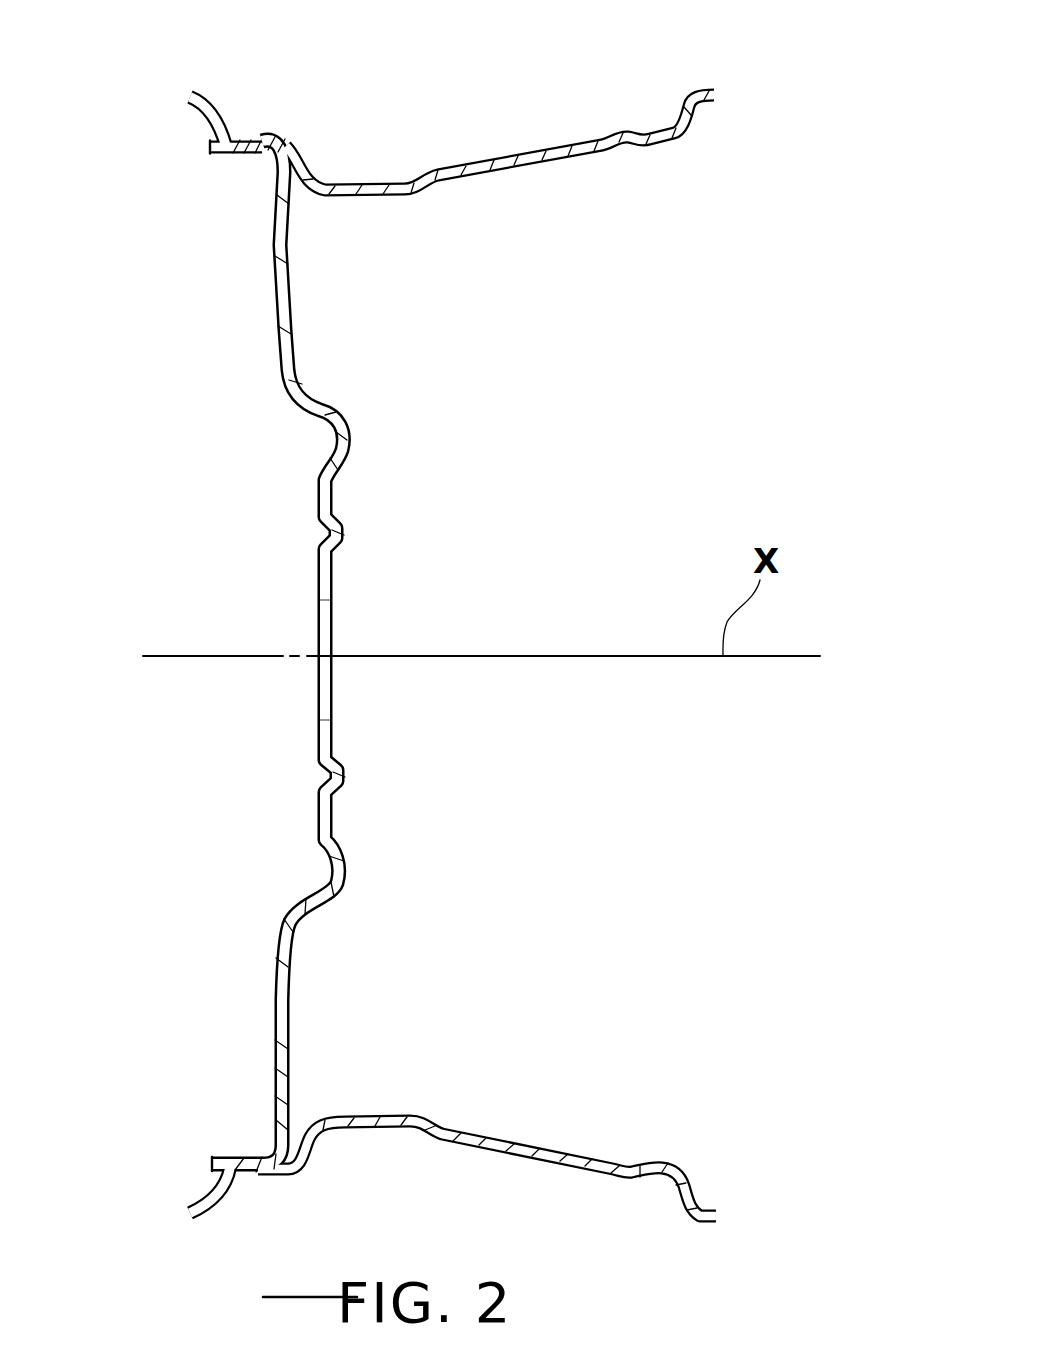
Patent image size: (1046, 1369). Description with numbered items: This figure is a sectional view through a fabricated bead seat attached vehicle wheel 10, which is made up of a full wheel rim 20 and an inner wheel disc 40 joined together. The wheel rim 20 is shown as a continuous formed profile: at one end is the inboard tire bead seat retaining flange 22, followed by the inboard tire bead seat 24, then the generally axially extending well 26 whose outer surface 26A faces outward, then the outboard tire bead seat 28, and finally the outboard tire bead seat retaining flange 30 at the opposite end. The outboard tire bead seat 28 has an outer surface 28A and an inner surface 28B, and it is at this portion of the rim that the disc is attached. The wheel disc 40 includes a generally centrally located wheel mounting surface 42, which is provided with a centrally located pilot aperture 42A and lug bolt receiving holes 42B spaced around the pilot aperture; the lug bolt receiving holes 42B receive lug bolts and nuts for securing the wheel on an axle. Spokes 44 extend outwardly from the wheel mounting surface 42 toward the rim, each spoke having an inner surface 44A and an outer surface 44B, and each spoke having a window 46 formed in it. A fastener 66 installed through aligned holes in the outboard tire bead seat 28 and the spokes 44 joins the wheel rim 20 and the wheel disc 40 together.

The fabricated vehicle wheel 10 is at (595, 358).
The wheel rim 20 is at (522, 170).
The inboard tire bead seat retaining flange 22 is at (678, 105).
The inboard tire bead seat 24 is at (648, 134).
The well 26 is at (474, 165).
The outer surface of the well 26A is at (305, 193).
The outboard tire bead seat 28 is at (258, 138).
The outer surface of the outboard tire bead seat 28A is at (252, 157).
The inner surface of the outboard tire bead seat 28B is at (240, 137).
The outboard tire bead seat retaining flange 30 is at (222, 132).
The wheel disc 40 is at (306, 921).
The wheel mounting surface 42 is at (352, 868).
The pilot aperture 42A is at (325, 555).
The lug bolt receiving holes 42B is at (326, 468).
The spokes 44 is at (275, 1063).
The inner surface of the spoke 44A is at (234, 1176).
The outer surface of the spoke 44B is at (222, 1155).
The window 46 is at (296, 340).
The fastener 66 is at (236, 156).